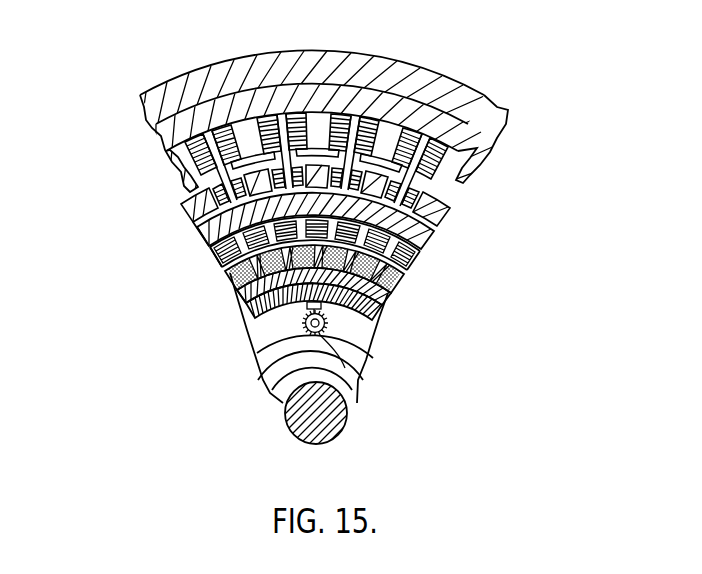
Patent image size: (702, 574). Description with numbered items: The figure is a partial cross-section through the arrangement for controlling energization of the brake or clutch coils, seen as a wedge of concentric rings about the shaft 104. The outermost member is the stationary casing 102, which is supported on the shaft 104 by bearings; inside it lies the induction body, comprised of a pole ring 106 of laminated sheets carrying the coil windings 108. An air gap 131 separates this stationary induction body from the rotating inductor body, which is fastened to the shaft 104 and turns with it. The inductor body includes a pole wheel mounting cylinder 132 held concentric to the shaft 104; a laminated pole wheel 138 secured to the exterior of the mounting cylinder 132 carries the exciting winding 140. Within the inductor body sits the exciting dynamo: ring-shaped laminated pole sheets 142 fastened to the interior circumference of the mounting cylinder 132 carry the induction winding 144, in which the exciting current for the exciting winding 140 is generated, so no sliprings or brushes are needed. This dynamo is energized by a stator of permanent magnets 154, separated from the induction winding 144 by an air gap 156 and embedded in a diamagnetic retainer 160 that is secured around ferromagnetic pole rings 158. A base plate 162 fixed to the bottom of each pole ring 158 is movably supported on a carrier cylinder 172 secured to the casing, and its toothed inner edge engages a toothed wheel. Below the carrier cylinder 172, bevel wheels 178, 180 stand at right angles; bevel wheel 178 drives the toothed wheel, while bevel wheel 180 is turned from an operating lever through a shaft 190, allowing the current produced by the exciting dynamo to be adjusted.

The stationary casing 102 is at (340, 50).
The shaft 104 is at (323, 430).
The pole ring 106 is at (373, 97).
The coil windings 108 is at (270, 140).
The air gap 131 is at (181, 196).
The pole wheel mounting cylinder 132 is at (222, 240).
The pole wheel 138 is at (196, 229).
The exciting winding 140 is at (447, 218).
The pole sheets 142 is at (432, 249).
The induction winding 144 is at (405, 266).
The permanent magnets 154 is at (246, 294).
The air gap 156 is at (243, 252).
The pole rings 158 is at (393, 290).
The retainer 160 is at (403, 275).
The base plate 162 is at (242, 306).
The carrier cylinder 172 is at (251, 347).
The bevel wheel 178 is at (373, 345).
The bevel wheel 180 is at (367, 362).
The shaft 190 is at (353, 387).